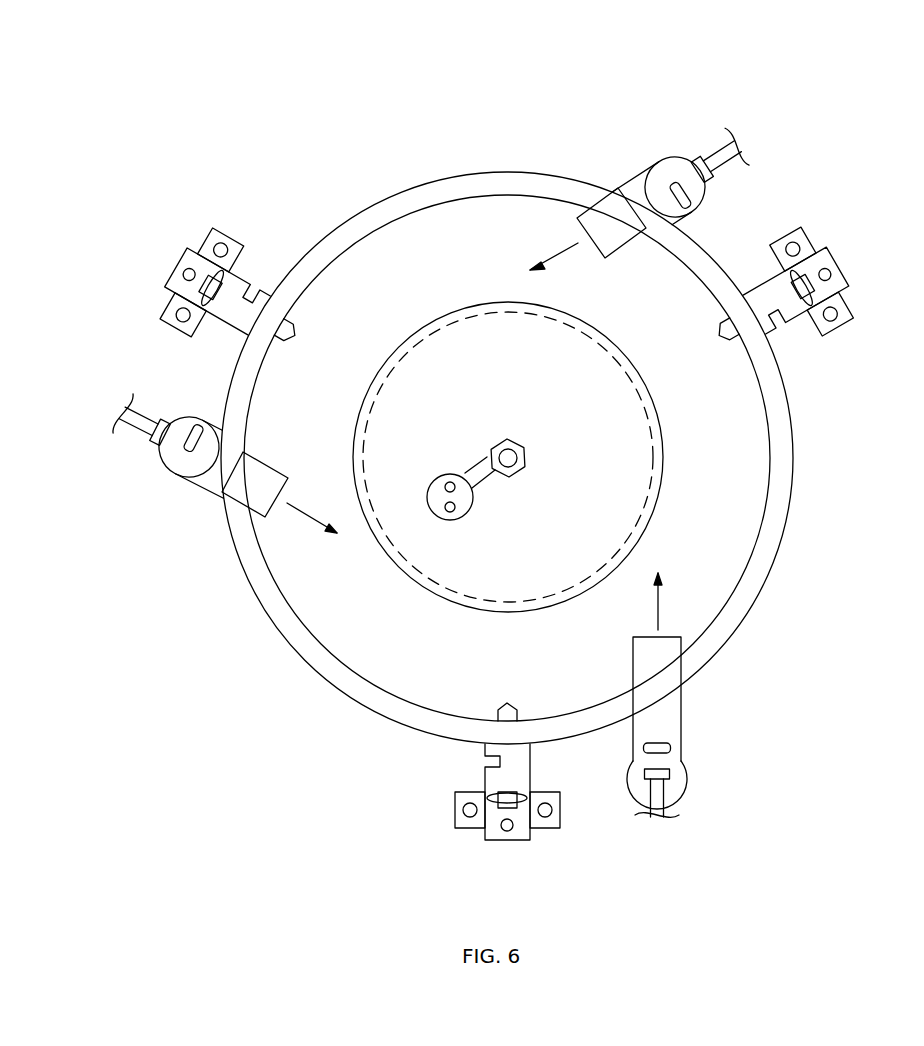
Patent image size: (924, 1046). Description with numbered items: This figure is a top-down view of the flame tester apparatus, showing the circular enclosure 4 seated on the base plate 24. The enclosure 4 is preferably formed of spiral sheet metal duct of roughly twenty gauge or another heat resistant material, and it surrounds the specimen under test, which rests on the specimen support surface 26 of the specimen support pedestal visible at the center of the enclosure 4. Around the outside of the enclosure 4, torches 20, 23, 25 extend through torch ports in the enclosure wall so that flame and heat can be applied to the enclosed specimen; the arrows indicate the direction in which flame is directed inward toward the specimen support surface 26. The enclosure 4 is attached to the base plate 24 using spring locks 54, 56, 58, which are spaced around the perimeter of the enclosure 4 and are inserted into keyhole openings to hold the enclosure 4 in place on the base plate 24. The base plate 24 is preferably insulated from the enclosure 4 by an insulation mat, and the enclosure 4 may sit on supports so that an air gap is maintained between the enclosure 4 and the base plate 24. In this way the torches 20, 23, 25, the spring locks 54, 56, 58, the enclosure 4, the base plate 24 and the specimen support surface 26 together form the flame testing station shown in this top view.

The enclosure 4 is at (305, 645).
The torch 20 is at (188, 430).
The torch 23 is at (675, 707).
The base plate 24 is at (735, 490).
The gas nozzle 25 is at (672, 153).
The specimen support surface 26 is at (463, 345).
The spring lock 54 is at (205, 250).
The spring lock 56 is at (455, 792).
The spring lock 58 is at (805, 253).